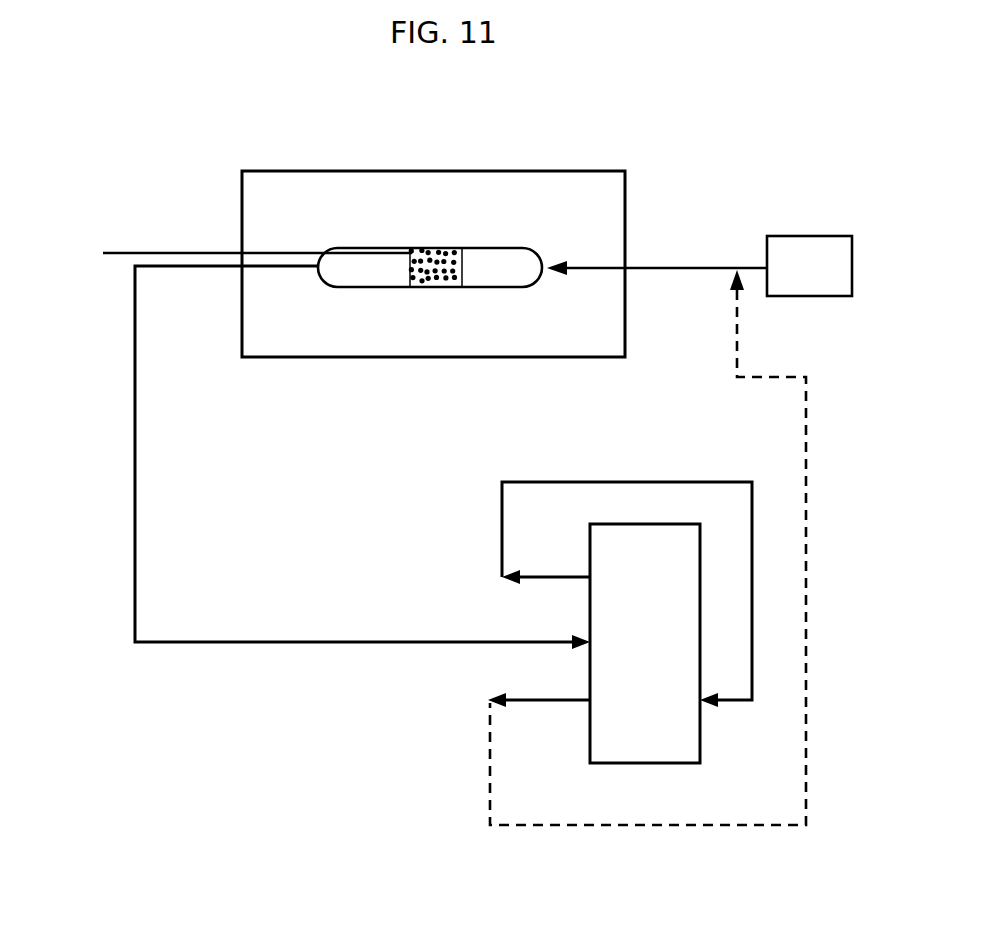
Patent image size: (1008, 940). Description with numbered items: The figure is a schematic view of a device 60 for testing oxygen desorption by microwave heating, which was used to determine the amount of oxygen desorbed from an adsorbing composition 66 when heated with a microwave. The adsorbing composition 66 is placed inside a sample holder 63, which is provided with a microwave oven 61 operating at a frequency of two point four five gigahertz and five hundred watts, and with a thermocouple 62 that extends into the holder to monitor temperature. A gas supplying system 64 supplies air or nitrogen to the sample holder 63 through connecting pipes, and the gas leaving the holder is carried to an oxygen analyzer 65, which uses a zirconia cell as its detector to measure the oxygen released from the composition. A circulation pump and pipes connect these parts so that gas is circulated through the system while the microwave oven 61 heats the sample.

The device for testing oxygen desorption with microwave heating 60 is at (293, 707).
The microwave oven 61 is at (467, 171).
The thermocouple 62 is at (187, 253).
The sample holder 63 is at (500, 287).
The gas supplying system 64 is at (810, 235).
The oxygen analyzer 65 is at (643, 524).
The adsorbing composition 66 is at (420, 287).